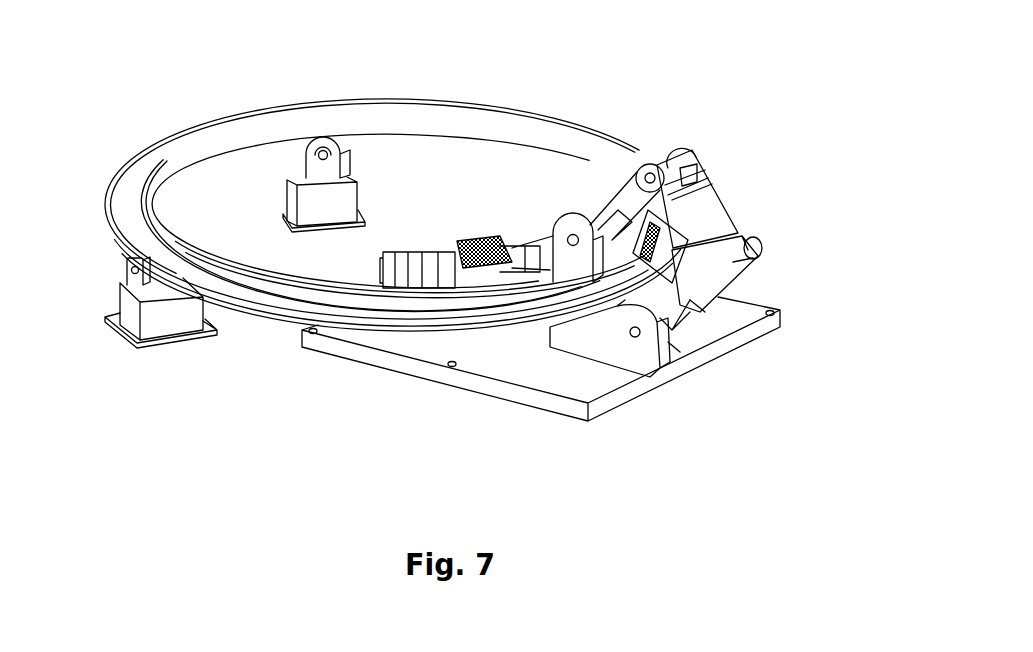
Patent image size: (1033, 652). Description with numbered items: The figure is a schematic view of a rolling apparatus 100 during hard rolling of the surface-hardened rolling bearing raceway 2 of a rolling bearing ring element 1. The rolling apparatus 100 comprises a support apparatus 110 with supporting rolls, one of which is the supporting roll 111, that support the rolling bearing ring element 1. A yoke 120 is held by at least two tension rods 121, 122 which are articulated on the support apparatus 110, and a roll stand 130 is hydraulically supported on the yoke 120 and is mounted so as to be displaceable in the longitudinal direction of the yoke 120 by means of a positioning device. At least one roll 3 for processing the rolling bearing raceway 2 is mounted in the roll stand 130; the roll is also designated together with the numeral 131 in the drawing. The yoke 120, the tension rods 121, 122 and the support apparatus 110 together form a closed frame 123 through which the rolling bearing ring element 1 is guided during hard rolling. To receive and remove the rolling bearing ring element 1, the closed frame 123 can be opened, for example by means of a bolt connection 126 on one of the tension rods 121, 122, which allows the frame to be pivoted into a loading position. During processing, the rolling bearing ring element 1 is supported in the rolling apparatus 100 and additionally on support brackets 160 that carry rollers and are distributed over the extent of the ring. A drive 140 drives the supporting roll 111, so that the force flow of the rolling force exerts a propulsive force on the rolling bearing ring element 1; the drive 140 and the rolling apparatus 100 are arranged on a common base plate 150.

The rolling bearing ring element 1 is at (222, 122).
The rolling bearing raceway 2 is at (123, 190).
The roll 3 is at (672, 307).
The rolling apparatus 100 is at (717, 67).
The support apparatus 110 is at (640, 357).
The supporting roll 111 is at (610, 247).
The yoke 120 is at (680, 210).
The tension rod 121 is at (627, 197).
The tension rod 122 is at (683, 305).
The closed frame 123 is at (703, 150).
The bolt connection 126 is at (652, 162).
The roll stand 130 is at (690, 248).
The actuator rod 131 is at (717, 359).
The drive 140 is at (453, 253).
The base plate 150 is at (420, 368).
The support bracket 160 is at (127, 313).